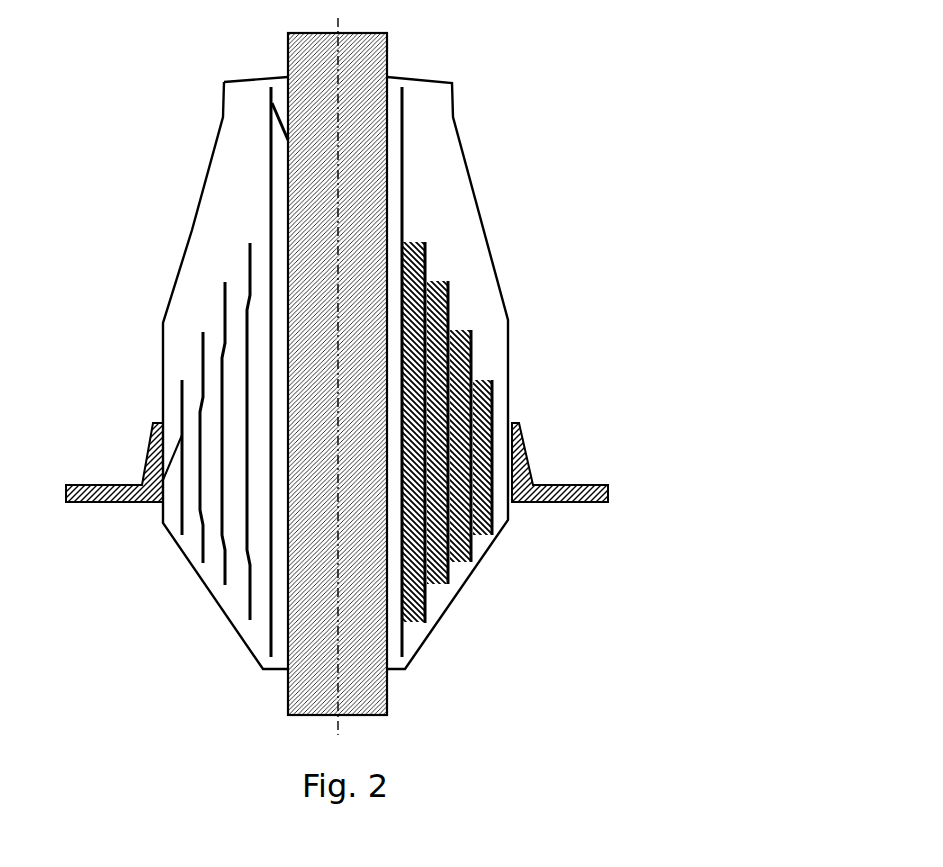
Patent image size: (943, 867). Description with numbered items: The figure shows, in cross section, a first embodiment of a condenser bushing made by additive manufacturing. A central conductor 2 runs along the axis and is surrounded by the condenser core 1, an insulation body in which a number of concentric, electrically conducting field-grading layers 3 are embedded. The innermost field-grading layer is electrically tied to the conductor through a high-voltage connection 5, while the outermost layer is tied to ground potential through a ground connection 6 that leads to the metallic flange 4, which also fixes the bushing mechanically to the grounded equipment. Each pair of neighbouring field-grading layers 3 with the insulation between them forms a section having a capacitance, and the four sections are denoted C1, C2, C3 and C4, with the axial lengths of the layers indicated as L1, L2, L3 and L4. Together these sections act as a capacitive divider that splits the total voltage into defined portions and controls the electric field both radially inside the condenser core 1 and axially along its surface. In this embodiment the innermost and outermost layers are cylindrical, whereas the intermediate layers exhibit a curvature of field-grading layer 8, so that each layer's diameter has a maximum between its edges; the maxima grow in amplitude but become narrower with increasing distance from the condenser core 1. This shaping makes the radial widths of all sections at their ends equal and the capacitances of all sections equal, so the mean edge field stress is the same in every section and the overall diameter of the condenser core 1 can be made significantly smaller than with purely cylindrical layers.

The condenser core 1 is at (457, 213).
The conductor 2 is at (370, 53).
The field-grading layers 3 is at (405, 153).
The flange 4 is at (530, 463).
The high-voltage connection 5 is at (282, 128).
The ground connection 6 is at (158, 423).
The curvature of field-grading layer 8 is at (225, 540).
The first section capacitance C1 is at (418, 269).
The second section capacitance C2 is at (438, 318).
The third section capacitance C3 is at (458, 362).
The fourth section capacitance C4 is at (478, 413).
The axial length of first layer L1 is at (629, 433).
The axial length of second layer L2 is at (614, 433).
The axial length of third layer L3 is at (603, 446).
The axial length of fourth layer L4 is at (595, 458).